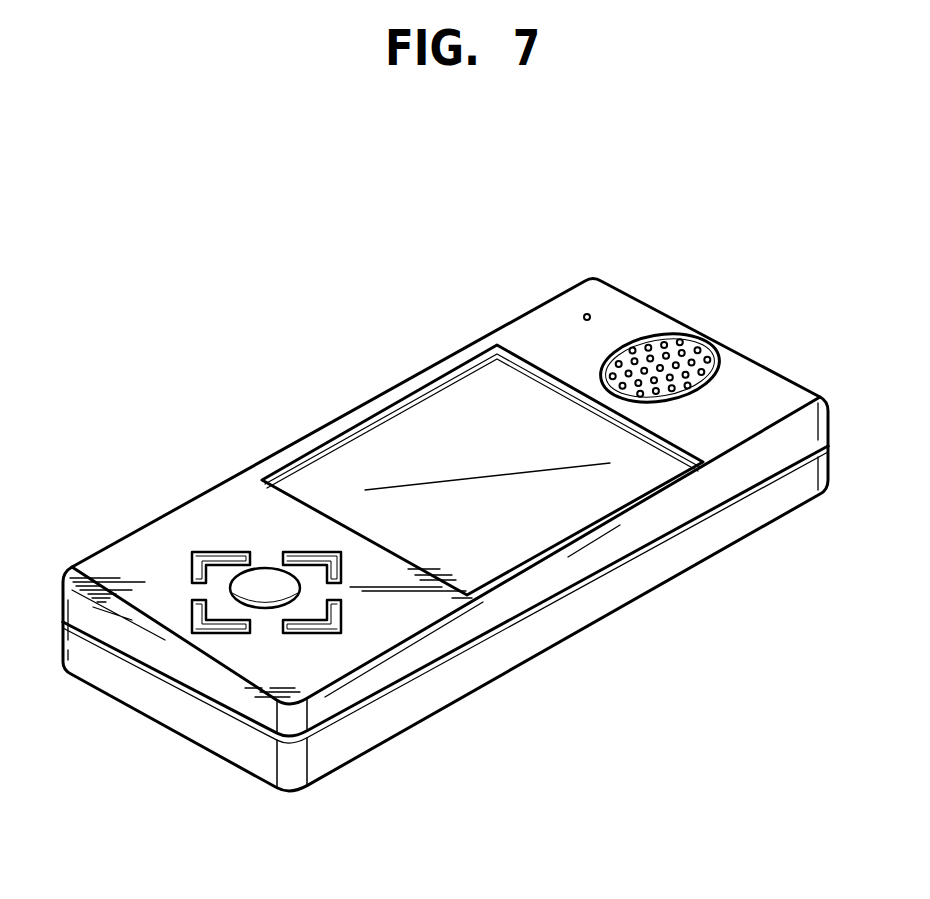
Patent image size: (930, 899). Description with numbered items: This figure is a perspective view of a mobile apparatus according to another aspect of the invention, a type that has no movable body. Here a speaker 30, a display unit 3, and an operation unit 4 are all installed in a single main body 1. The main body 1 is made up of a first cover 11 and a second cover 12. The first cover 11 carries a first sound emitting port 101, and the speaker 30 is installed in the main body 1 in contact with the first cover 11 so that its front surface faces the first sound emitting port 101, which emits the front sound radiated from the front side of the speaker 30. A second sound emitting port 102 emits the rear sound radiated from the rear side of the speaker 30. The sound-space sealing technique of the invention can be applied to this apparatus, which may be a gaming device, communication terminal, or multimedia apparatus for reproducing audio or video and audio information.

The main body 1 is at (452, 498).
The display unit 3 is at (386, 448).
The operation unit 4 is at (237, 537).
The first cover 11 is at (454, 643).
The second cover 12 is at (407, 717).
The speaker 30 is at (718, 337).
The first sound emitting port 101 is at (683, 348).
The second sound emitting port 102 is at (587, 313).